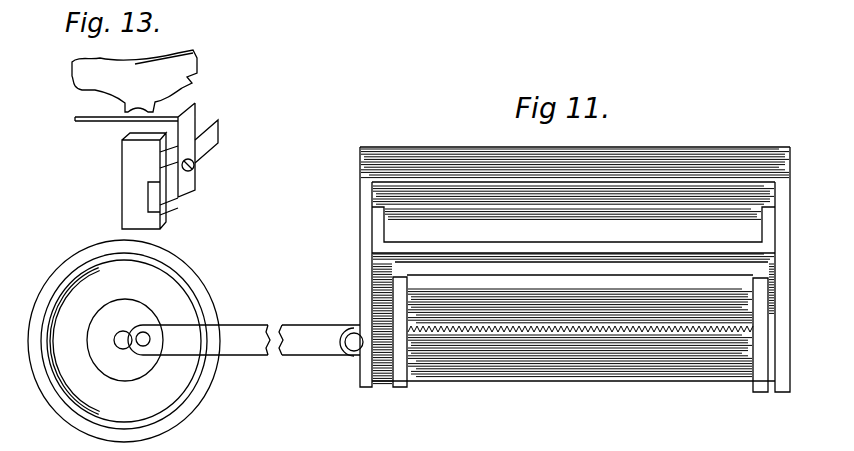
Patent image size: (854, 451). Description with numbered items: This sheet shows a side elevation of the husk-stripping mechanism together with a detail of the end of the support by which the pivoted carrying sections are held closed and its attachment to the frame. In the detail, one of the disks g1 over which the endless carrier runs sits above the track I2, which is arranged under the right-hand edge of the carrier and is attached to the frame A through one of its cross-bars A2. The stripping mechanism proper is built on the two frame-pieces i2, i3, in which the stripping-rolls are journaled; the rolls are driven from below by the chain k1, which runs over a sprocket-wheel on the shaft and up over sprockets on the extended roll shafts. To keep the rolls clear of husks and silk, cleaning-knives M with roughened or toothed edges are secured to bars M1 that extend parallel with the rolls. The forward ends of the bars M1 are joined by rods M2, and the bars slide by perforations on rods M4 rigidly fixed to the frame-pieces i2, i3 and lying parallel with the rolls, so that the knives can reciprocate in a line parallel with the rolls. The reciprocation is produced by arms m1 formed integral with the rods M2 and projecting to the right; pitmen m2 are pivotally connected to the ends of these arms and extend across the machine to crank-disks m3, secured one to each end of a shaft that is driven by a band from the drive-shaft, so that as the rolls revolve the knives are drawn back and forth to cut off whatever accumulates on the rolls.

In FIG. 13, the disks g1 is at (134, 81).
In FIG. 13, the track I2 is at (172, 103).
In FIG. 13, the frame A is at (144, 181).
In FIG. 13, the cross-bars A2 is at (203, 158).
In FIG. 11, the chain k1 is at (545, 390).
In FIG. 11, the frame-piece i3 is at (362, 242).
In FIG. 11, the frame-piece i2 is at (790, 240).
In FIG. 11, the cleaning-knives M is at (658, 355).
In FIG. 11, the bars M1 is at (433, 268).
In FIG. 11, the rods M2 is at (368, 312).
In FIG. 11, the rods M4 is at (505, 308).
In FIG. 11, the arms m1 is at (122, 343).
In FIG. 11, the pitmen m2 is at (250, 347).
In FIG. 11, the crank-disks m3 is at (125, 340).